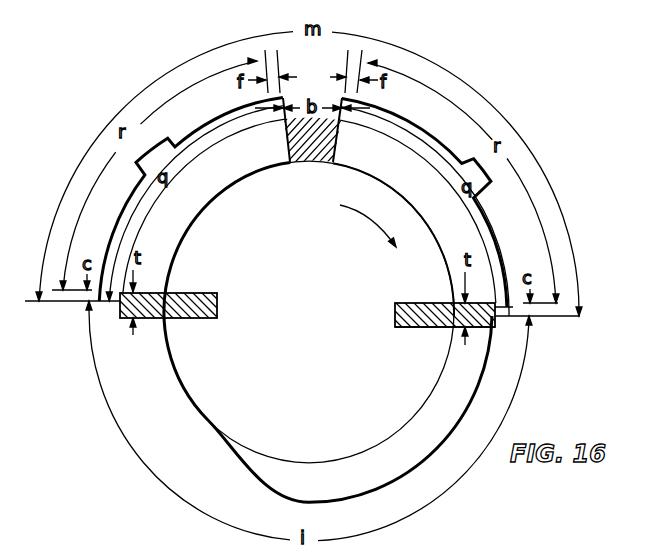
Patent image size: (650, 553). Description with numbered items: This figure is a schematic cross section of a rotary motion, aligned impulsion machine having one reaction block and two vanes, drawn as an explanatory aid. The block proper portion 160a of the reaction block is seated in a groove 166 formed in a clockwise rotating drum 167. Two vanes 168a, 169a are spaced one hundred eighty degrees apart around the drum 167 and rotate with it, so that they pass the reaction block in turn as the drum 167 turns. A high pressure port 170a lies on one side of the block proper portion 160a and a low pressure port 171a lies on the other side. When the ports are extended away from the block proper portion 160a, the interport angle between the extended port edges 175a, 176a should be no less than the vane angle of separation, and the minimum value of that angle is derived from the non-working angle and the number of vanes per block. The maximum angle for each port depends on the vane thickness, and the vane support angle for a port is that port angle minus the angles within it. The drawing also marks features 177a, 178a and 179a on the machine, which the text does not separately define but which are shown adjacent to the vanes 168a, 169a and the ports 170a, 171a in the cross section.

The block proper portion 160a is at (300, 136).
The groove 166 is at (416, 184).
The drum 167 is at (330, 280).
The vane 168a is at (418, 291).
The vane 169a is at (181, 296).
The high pressure port 170a is at (445, 133).
The low pressure port 171a is at (156, 178).
The extended port edge 175a is at (498, 318).
The extended port edge 176a is at (120, 304).
The right bar underside 177a is at (421, 327).
The right notched strip turn 178a is at (553, 280).
The left strip portion adjacent slot 179a is at (263, 90).